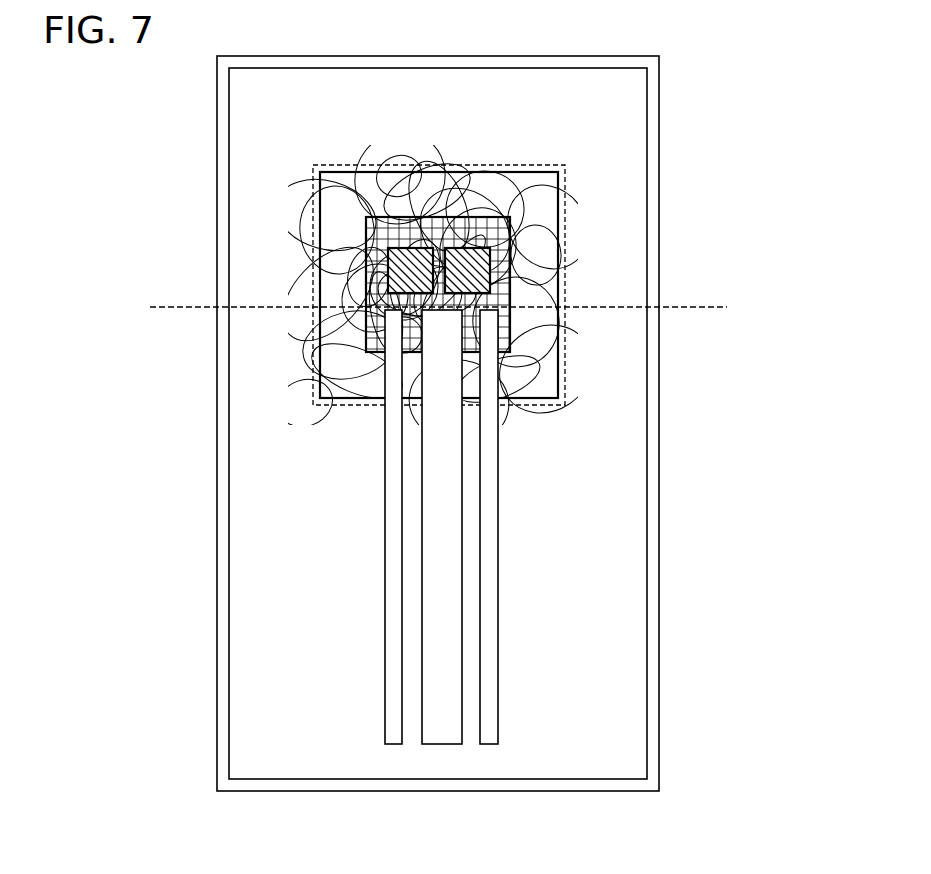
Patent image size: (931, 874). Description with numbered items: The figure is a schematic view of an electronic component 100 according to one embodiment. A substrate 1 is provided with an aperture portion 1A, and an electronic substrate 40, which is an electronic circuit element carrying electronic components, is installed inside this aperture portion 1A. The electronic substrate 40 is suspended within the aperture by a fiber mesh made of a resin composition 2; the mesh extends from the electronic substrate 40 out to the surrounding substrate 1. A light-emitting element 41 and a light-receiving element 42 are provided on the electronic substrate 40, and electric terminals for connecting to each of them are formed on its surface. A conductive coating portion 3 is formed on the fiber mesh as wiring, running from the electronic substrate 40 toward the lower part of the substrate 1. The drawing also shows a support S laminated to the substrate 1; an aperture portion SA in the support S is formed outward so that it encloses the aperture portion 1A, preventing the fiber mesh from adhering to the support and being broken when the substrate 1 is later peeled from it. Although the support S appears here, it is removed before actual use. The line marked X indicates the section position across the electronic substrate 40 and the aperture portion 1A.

The electronic component 100 is at (680, 73).
The substrate 1 is at (610, 253).
The aperture portion 1A is at (558, 172).
The resin composition 2 is at (527, 191).
The conductive coating portion 3 is at (482, 440).
The electronic substrate 40 is at (366, 252).
The light-emitting element 41 is at (408, 243).
The light-receiving element 42 is at (453, 262).
The support S is at (217, 97).
The aperture portion of the support SA is at (306, 186).
The section line X is at (440, 307).